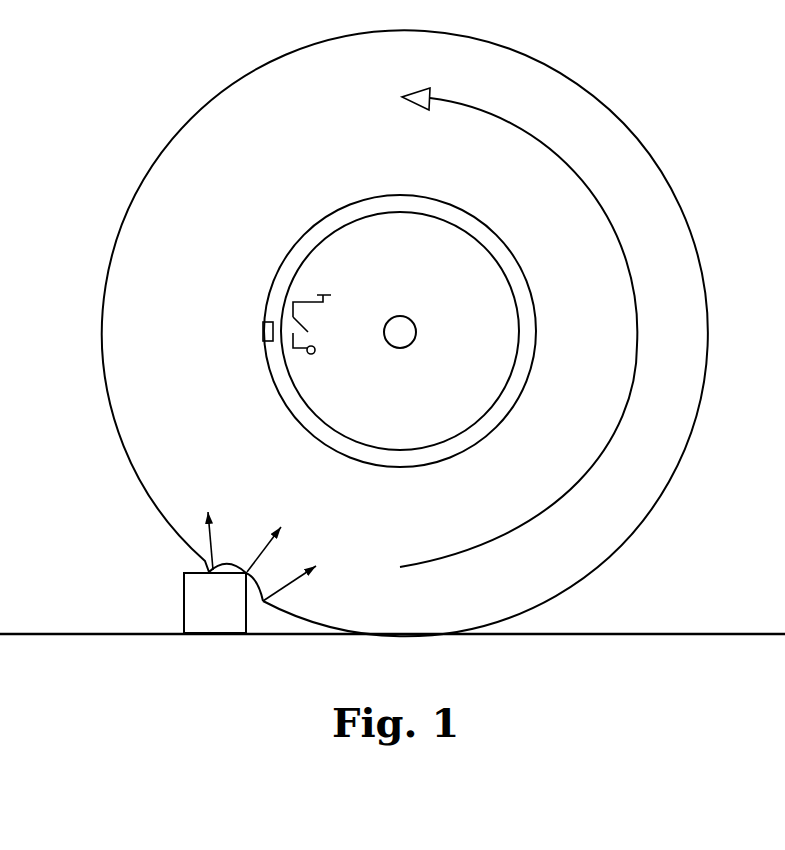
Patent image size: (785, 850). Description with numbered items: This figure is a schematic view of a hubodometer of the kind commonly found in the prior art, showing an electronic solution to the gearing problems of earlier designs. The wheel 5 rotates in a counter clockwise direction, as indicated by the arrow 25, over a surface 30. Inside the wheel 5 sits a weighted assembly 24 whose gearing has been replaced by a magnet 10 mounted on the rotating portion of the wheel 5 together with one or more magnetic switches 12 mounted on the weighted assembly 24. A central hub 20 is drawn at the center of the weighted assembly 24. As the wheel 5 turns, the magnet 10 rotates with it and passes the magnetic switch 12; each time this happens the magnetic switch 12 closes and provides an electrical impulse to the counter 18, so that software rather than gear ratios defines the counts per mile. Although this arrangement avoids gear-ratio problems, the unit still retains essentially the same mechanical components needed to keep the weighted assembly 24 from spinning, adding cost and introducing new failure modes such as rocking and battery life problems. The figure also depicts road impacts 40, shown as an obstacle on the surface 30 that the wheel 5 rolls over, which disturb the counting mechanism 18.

The wheel 5 is at (170, 135).
The magnet 10 is at (260, 327).
The magnetic switch 12 is at (307, 320).
The counter 18 is at (309, 357).
The hub/axle 20 is at (422, 321).
The weighted assembly 24 is at (372, 446).
The arrow 25 is at (630, 397).
The surface 30 is at (641, 631).
The road impacts 40 is at (184, 600).